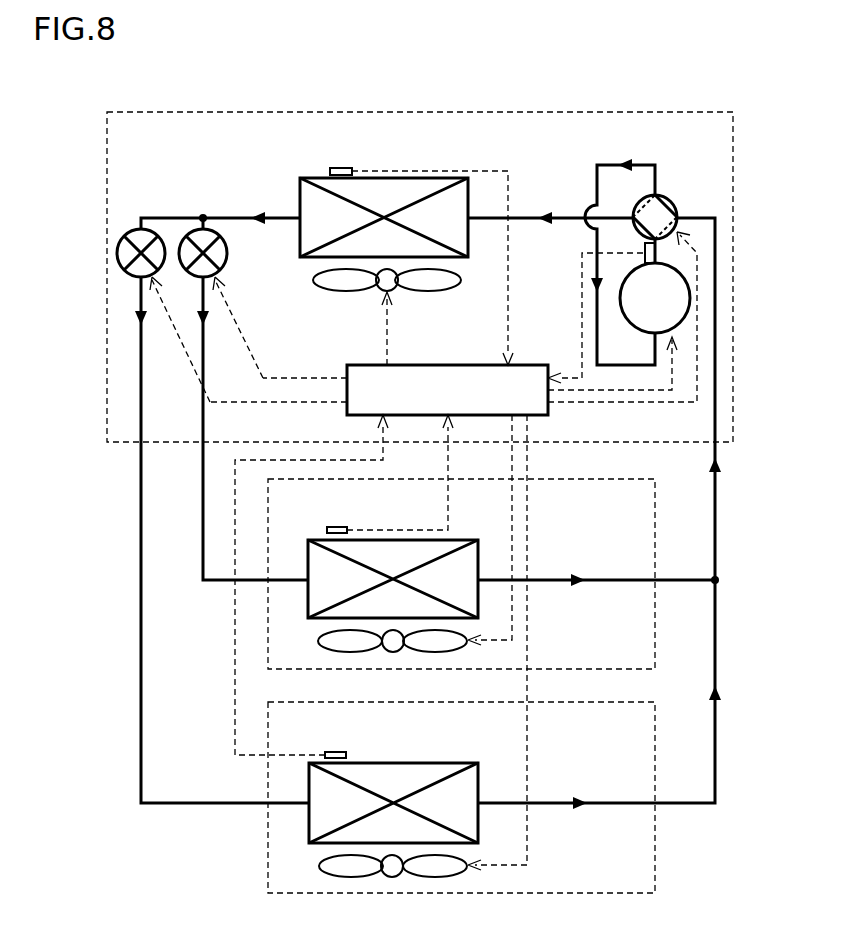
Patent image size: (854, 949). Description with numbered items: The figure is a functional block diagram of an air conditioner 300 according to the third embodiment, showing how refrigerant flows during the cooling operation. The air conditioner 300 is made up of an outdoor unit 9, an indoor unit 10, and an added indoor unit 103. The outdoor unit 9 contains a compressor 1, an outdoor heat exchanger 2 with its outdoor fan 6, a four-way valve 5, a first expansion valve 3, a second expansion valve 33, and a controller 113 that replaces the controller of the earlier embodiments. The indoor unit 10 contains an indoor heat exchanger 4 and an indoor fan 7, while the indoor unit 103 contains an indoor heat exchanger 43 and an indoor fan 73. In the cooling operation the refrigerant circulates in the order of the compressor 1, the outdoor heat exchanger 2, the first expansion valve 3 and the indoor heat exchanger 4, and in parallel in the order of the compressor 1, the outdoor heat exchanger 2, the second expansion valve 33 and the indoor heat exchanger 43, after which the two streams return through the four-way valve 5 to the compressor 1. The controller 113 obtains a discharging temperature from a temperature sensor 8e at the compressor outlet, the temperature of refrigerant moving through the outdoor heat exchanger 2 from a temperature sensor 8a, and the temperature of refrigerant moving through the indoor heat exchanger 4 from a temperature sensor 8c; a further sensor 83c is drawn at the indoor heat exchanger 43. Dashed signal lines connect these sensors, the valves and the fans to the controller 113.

The air conditioner 300 is at (110, 84).
The outdoor unit 9 is at (690, 112).
The indoor unit 10 is at (620, 479).
The indoor unit 103 is at (620, 702).
The second expansion valve 33 is at (128, 229).
The first expansion valve 3 is at (227, 253).
The outdoor heat exchanger 2 is at (300, 196).
The temperature sensor 8a is at (341, 168).
The outdoor fan 6 is at (350, 292).
The four-way valve 5 is at (662, 198).
The temperature sensor 8e is at (645, 250).
The compressor 1 is at (640, 333).
The controller 113 is at (518, 365).
The indoor heat exchanger 4 is at (460, 540).
The temperature sensor 8c is at (337, 527).
The indoor fan 7 is at (318, 641).
The indoor heat exchanger 43 is at (455, 763).
The temperature sensor 83c is at (336, 752).
The indoor fan 73 is at (320, 866).